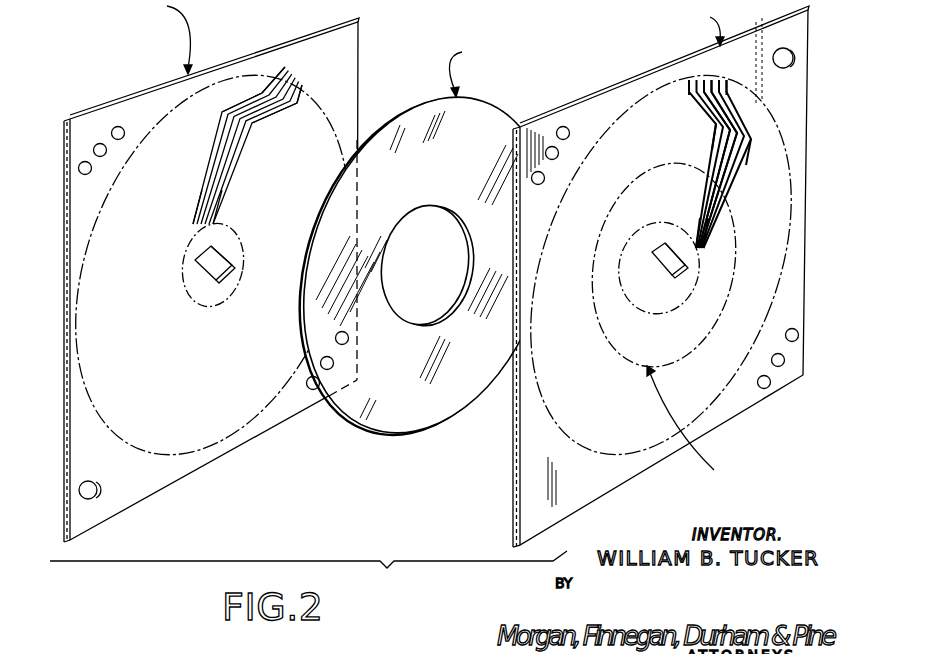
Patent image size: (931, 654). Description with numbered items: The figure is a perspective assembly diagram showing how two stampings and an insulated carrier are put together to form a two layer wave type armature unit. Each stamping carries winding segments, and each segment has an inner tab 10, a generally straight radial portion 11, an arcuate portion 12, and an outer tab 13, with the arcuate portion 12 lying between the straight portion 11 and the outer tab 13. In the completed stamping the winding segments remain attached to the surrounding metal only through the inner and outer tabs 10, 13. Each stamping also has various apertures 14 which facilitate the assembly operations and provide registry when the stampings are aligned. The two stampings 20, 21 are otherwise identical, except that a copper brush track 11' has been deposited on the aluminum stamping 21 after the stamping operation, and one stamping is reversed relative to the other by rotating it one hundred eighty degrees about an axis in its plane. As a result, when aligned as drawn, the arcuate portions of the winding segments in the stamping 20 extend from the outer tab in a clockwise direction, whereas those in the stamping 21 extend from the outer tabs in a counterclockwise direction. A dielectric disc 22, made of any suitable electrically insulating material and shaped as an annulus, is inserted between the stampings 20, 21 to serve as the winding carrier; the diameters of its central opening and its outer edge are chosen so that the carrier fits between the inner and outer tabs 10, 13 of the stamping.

The inner tab 10 is at (212, 221).
The generally straight radial portion 11 is at (472, 157).
The copper brush track 11' is at (743, 164).
The arcuate portion 12 is at (266, 110).
The outer tab 13 is at (287, 69).
The apertures 14 is at (116, 126).
The stamping 20 is at (275, 34).
The aluminum stamping 21 is at (648, 75).
The dielectric disc 22 is at (406, 108).